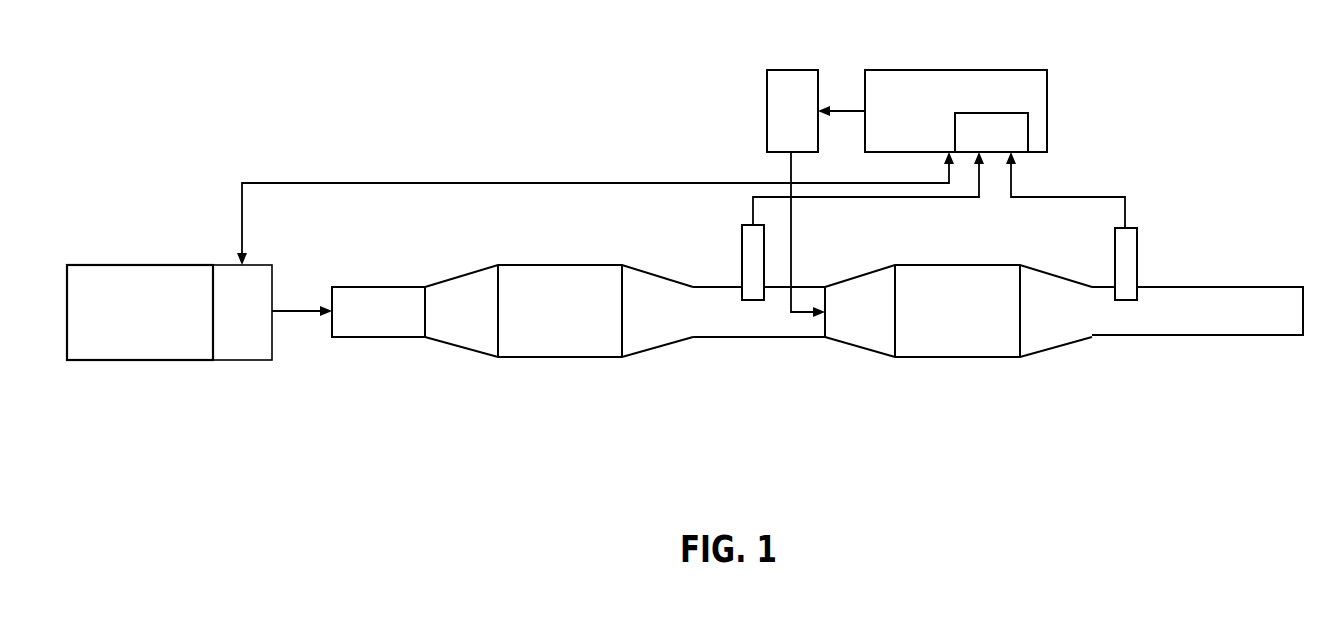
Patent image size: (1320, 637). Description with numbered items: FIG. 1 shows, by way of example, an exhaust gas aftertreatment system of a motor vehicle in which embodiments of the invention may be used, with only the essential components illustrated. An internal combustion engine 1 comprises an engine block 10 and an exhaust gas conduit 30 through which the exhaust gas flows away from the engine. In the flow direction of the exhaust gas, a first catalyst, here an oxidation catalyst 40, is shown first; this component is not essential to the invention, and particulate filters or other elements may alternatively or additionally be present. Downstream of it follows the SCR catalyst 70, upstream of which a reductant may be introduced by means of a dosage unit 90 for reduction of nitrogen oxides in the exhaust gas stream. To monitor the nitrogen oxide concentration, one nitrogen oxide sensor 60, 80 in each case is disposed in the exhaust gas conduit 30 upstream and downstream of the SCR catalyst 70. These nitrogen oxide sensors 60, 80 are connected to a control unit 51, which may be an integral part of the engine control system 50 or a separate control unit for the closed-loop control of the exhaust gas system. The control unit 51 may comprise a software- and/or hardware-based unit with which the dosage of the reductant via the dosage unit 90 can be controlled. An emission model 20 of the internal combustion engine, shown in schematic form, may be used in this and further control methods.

The internal combustion engine 1 is at (1142, 150).
The engine block 10 is at (117, 362).
The emission model 20 is at (244, 362).
The exhaust gas conduit 30 is at (385, 325).
The oxidation catalyst 40 is at (560, 345).
The engine control system 50 is at (900, 78).
The control unit 51 is at (1028, 130).
The nitrogen oxide sensor 60 is at (748, 240).
The SCR catalyst 70 is at (963, 345).
The nitrogen oxide sensor 80 is at (1133, 253).
The dosage unit 90 is at (800, 78).